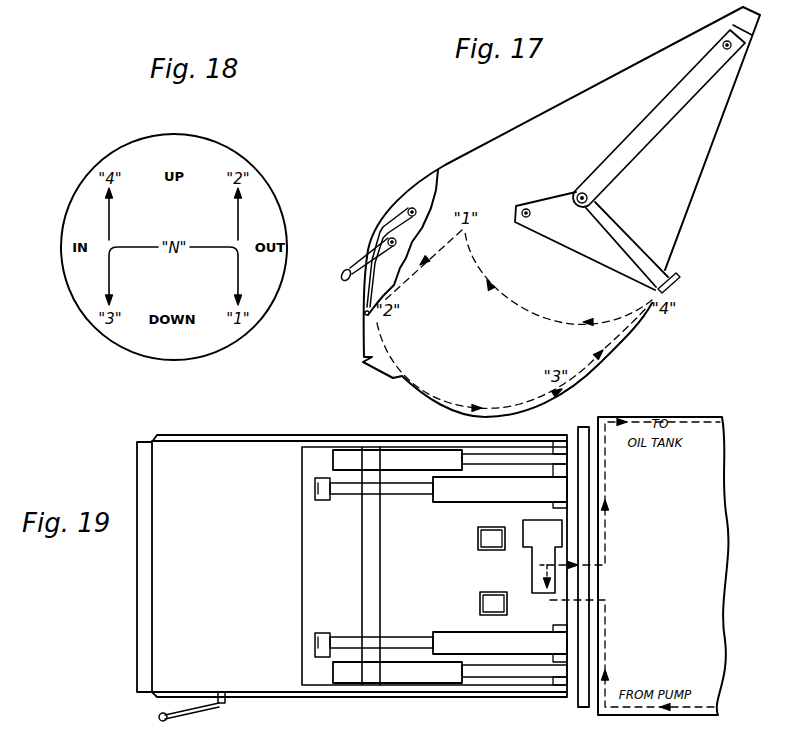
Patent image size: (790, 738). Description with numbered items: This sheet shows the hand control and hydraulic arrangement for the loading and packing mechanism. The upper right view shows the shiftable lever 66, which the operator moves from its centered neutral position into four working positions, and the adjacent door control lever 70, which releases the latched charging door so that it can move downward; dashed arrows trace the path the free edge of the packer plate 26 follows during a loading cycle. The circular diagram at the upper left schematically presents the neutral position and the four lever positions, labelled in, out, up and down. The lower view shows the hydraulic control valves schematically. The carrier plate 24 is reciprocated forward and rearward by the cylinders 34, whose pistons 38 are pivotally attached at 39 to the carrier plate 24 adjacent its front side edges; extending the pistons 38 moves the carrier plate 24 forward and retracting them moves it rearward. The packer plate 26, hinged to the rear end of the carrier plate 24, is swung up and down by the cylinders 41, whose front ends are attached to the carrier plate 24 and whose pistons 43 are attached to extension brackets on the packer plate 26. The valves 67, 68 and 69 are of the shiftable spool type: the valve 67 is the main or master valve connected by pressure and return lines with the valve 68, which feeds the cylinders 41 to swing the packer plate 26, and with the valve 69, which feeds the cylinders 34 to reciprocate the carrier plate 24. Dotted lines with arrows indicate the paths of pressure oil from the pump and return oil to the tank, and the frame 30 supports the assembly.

In FIG. 17, the carrier plate 24 is at (662, 124).
In FIG. 19, the carrier plate 24 is at (414, 566).
In FIG. 17, the packer plate 26 is at (622, 229).
In FIG. 19, the packer plate 26 is at (434, 566).
In FIG. 19, the frame 30 is at (352, 586).
In FIG. 19, the cylinders 34 is at (395, 702).
In FIG. 19, the pistons 38 is at (498, 702).
In FIG. 19, the pivotal attachment 39 is at (542, 582).
In FIG. 19, the cylinders 41 is at (452, 638).
In FIG. 19, the pistons 43 is at (403, 642).
In FIG. 17, the shiftable lever 66 is at (365, 265).
In FIG. 19, the shiftable lever 66 is at (190, 712).
In FIG. 19, the main or master valve 67 is at (542, 556).
In FIG. 19, the valve 68 is at (491, 538).
In FIG. 19, the valve 69 is at (493, 603).
In FIG. 17, the door control lever 70 is at (395, 222).